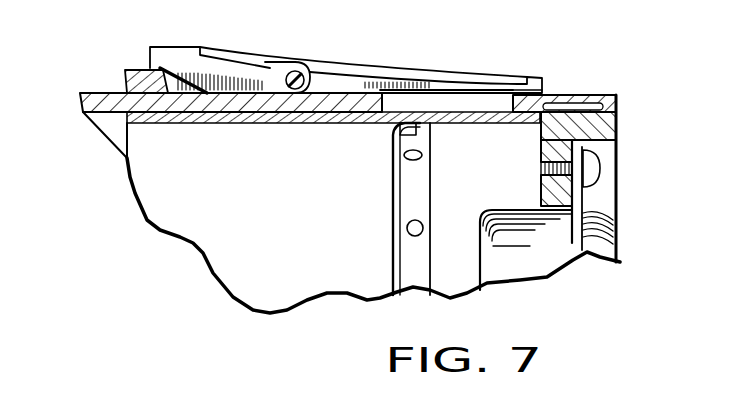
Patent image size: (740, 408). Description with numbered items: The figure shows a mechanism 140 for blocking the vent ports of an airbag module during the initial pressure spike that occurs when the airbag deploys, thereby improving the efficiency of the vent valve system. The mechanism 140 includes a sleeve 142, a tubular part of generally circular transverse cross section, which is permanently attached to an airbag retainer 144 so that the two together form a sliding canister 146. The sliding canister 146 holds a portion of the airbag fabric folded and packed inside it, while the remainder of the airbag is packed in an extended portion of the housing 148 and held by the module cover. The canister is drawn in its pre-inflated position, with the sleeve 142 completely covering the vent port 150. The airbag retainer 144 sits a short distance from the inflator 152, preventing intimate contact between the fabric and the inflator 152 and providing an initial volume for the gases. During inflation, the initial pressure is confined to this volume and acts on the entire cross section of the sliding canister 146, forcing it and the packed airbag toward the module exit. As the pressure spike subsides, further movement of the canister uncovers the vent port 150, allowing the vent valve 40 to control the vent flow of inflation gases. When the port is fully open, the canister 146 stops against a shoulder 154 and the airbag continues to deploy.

The vent valve 40 is at (330, 70).
The mechanism 140 is at (583, 67).
The sleeve 142 is at (505, 128).
The airbag retainer 144 is at (393, 195).
The sliding canister 146 is at (357, 177).
The housing 148 is at (100, 93).
The vent port 150 is at (512, 104).
The inflator 152 is at (533, 240).
The shoulder 154 is at (229, 124).